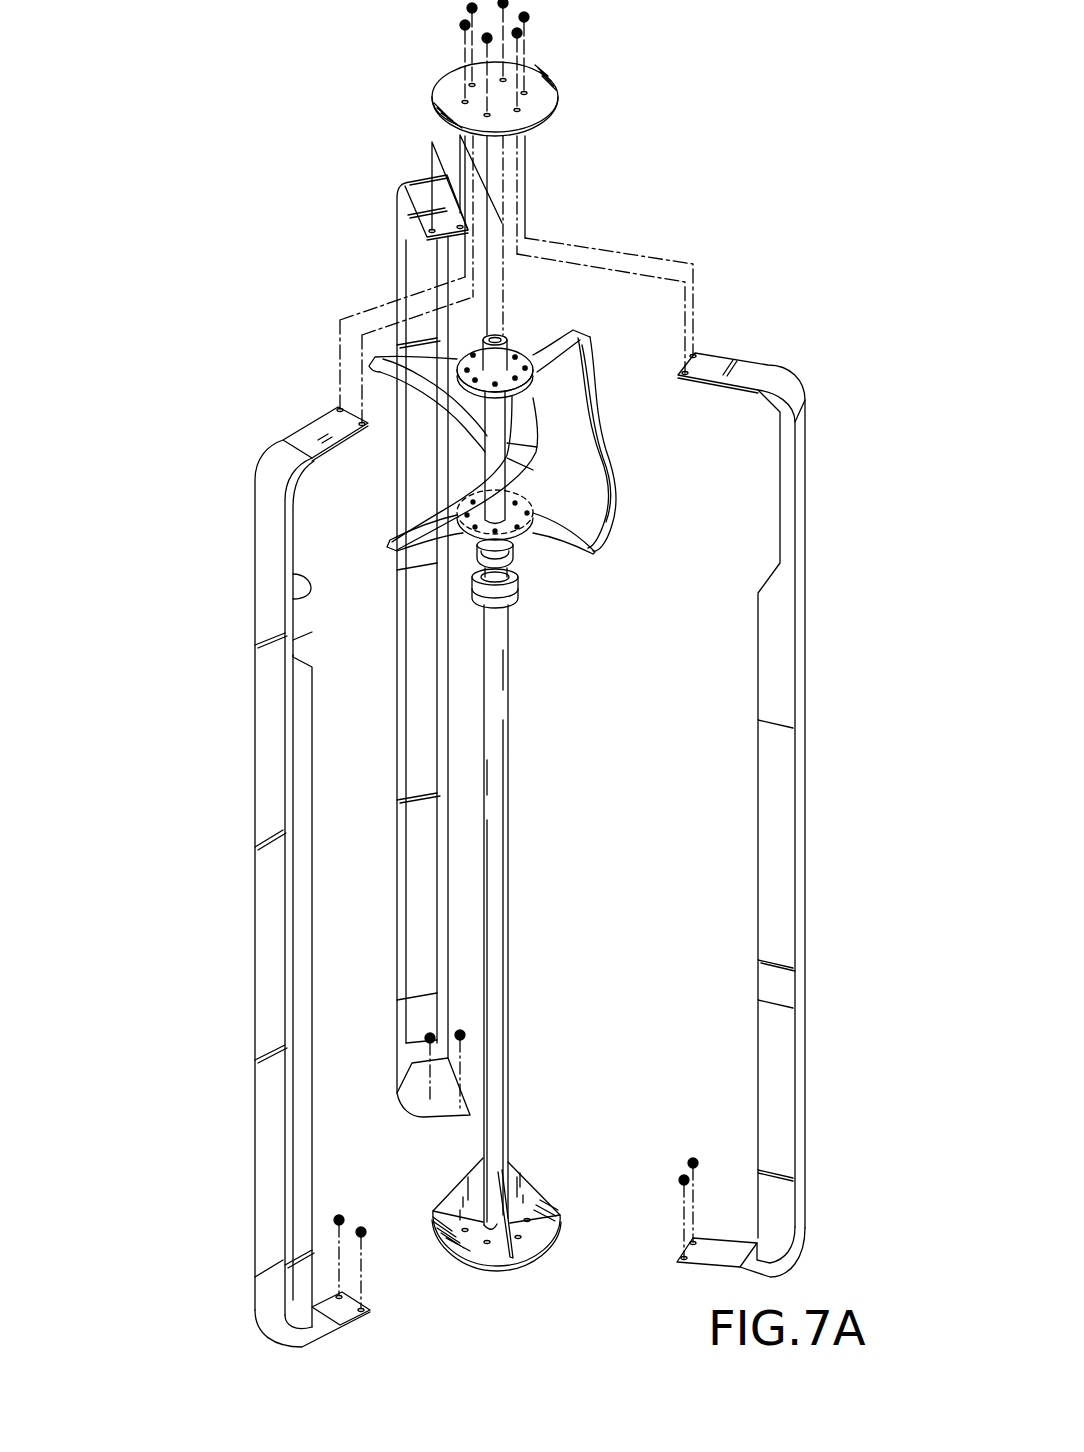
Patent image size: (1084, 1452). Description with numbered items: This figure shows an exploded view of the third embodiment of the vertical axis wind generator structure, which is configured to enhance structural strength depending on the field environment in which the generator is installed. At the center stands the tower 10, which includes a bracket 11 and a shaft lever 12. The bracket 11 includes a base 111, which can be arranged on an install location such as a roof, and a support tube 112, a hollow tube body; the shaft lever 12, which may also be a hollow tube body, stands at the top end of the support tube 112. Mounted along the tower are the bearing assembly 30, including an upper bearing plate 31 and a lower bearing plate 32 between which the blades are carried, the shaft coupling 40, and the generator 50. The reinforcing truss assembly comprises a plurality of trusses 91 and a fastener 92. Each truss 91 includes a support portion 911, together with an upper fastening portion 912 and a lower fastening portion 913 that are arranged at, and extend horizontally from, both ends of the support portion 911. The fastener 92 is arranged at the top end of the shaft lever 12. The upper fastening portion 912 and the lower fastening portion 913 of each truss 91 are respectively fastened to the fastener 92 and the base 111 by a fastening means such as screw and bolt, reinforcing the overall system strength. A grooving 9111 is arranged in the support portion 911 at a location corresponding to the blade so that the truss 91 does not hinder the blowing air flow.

The tower 10 is at (525, 775).
The bracket 11 is at (462, 1212).
The base 111 is at (448, 1250).
The support tube 112 is at (495, 1160).
The shaft lever 12 is at (497, 336).
The bearing assembly 30 is at (568, 442).
The upper blade plate 31 is at (540, 353).
The lower blade plate 32 is at (532, 502).
The shaft coupling 40 is at (515, 556).
The generator 50 is at (516, 592).
The truss 91 is at (385, 248).
The support portion 911 is at (300, 830).
The grooving 9111 is at (300, 590).
The upper fastening portion 912 is at (330, 425).
The lower fastening portion 913 is at (352, 1312).
The fastener 92 is at (445, 95).